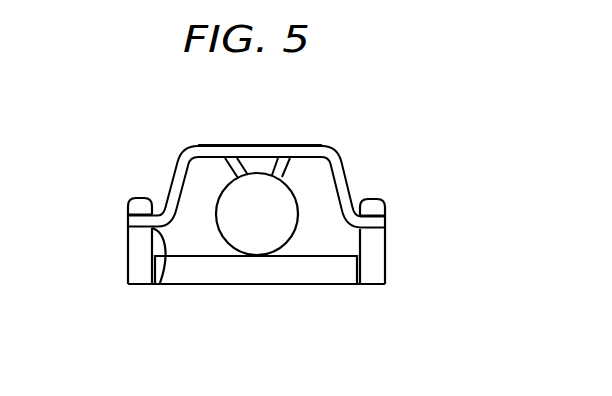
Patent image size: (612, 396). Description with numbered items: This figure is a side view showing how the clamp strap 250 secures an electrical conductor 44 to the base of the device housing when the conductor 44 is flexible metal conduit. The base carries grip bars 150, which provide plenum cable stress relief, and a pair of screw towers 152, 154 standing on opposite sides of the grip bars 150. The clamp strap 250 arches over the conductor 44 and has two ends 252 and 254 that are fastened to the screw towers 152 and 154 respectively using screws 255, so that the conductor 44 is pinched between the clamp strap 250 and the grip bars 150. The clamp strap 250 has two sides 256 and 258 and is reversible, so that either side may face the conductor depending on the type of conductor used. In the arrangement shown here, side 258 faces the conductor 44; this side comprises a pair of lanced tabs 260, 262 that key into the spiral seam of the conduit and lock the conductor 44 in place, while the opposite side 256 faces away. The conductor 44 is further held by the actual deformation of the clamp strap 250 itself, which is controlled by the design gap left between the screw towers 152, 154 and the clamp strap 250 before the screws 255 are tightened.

The electrical conductor 44 is at (296, 240).
The grip bars 150 is at (283, 282).
The screw tower 152 is at (127, 259).
The screw tower 154 is at (388, 262).
The clamp strap 250 is at (340, 160).
The clamp strap end 252 is at (125, 220).
The clamp strap end 254 is at (388, 217).
The screws 255 is at (131, 205).
The side of clamp strap 256 is at (194, 136).
The side of clamp strap 258 is at (158, 284).
The lanced tab 260 is at (226, 158).
The lanced tab 262 is at (282, 158).